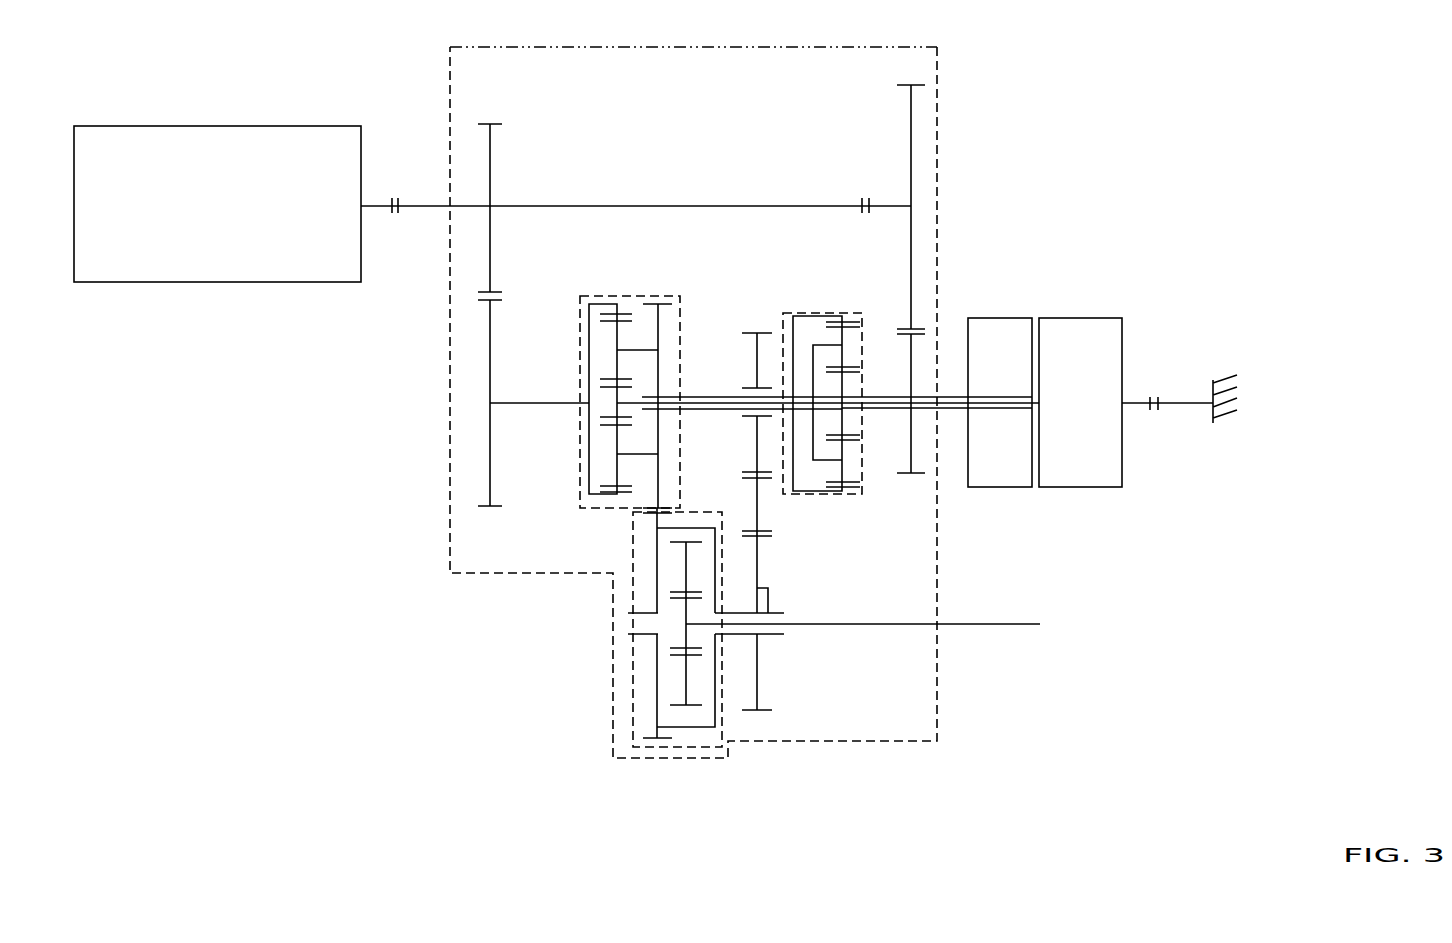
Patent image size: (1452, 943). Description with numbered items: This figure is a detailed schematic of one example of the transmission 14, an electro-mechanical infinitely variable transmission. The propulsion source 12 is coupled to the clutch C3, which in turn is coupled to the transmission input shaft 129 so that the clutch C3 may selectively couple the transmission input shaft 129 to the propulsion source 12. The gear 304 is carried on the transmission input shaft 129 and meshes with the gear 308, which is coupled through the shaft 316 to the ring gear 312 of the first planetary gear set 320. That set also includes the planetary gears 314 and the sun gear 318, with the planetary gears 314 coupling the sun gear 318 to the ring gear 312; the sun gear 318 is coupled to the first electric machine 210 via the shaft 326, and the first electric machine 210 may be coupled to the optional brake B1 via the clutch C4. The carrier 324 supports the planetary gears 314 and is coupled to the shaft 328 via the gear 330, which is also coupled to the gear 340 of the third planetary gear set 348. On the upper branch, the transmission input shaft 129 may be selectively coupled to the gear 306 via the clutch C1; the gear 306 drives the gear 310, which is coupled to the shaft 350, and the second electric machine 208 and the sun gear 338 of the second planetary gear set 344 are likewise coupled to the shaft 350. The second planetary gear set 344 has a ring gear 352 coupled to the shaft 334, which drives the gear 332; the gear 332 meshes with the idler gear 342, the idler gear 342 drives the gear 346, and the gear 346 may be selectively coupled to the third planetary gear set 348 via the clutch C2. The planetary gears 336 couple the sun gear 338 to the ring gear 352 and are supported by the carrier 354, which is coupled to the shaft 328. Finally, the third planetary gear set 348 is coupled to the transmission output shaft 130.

The propulsion source 12 is at (231, 214).
The transmission 14 is at (937, 47).
The transmission input shaft 129 is at (414, 208).
The transmission output shaft 130 is at (962, 624).
The second electric machine 208 is at (984, 318).
The first electric machine 210 is at (1081, 318).
The gear 304 is at (490, 148).
The gear 306 is at (911, 126).
The gear 308 is at (490, 335).
The gear 310 is at (911, 363).
The ring gear 312 is at (589, 310).
The planetary gears 314 is at (615, 333).
The shaft 316 is at (516, 403).
The sun gear 318 is at (613, 413).
The first planetary gear set 320 is at (580, 484).
The carrier 324 is at (640, 350).
The shaft 326 is at (697, 397).
The shaft 328 is at (718, 409).
The gear 330 is at (660, 477).
The gear 332 is at (757, 430).
The shaft 334 is at (780, 390).
The planetary gears 336 is at (843, 334).
The sun gear 338 is at (843, 423).
The gear 340 is at (657, 542).
The idler gear 342 is at (757, 505).
The second planetary gear set 344 is at (862, 495).
The gear 346 is at (757, 543).
The third planetary gear set 348 is at (722, 720).
The shaft 350 is at (960, 396).
The ring gear 352 is at (813, 345).
The carrier 354 is at (822, 316).
The clutch C1 is at (862, 194).
The clutch C2 is at (771, 585).
The clutch C3 is at (388, 194).
The clutch C4 is at (1146, 386).
The brake B1 is at (1222, 368).